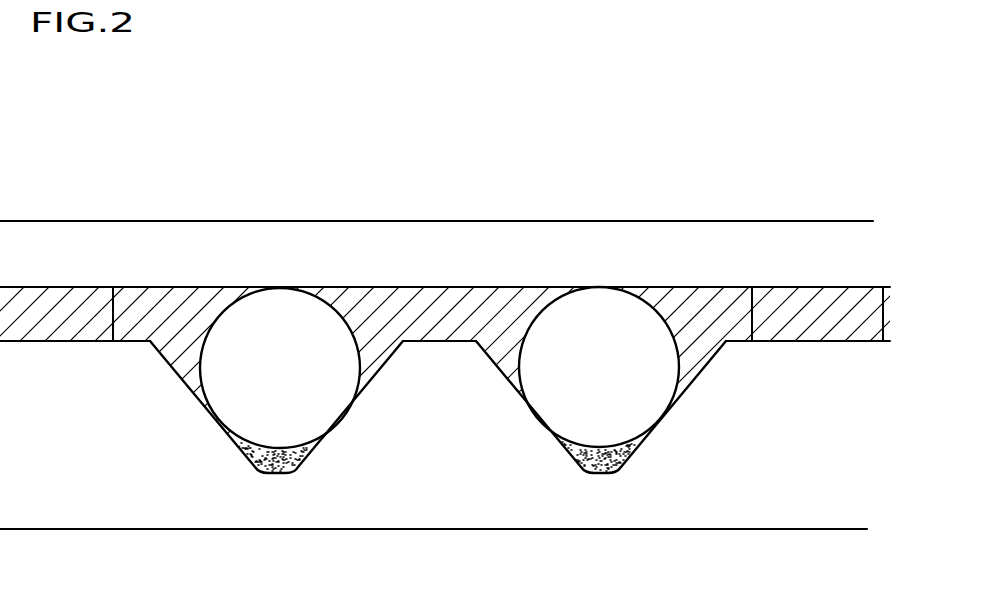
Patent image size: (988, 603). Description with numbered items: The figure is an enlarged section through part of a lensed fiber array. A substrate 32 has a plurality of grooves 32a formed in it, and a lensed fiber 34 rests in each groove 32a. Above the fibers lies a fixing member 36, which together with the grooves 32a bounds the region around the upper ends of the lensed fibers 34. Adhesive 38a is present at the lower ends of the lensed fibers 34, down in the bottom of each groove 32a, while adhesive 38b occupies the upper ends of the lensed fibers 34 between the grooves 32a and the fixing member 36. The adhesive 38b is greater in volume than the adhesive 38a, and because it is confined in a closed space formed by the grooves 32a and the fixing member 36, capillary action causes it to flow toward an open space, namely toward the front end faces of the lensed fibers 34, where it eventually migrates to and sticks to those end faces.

The substrate 32 is at (431, 508).
The grooves 32a is at (170, 365).
The lensed fibers 34 is at (243, 403).
The fixing member 36 is at (465, 236).
The adhesive 38a is at (287, 453).
The adhesive 38b is at (185, 300).